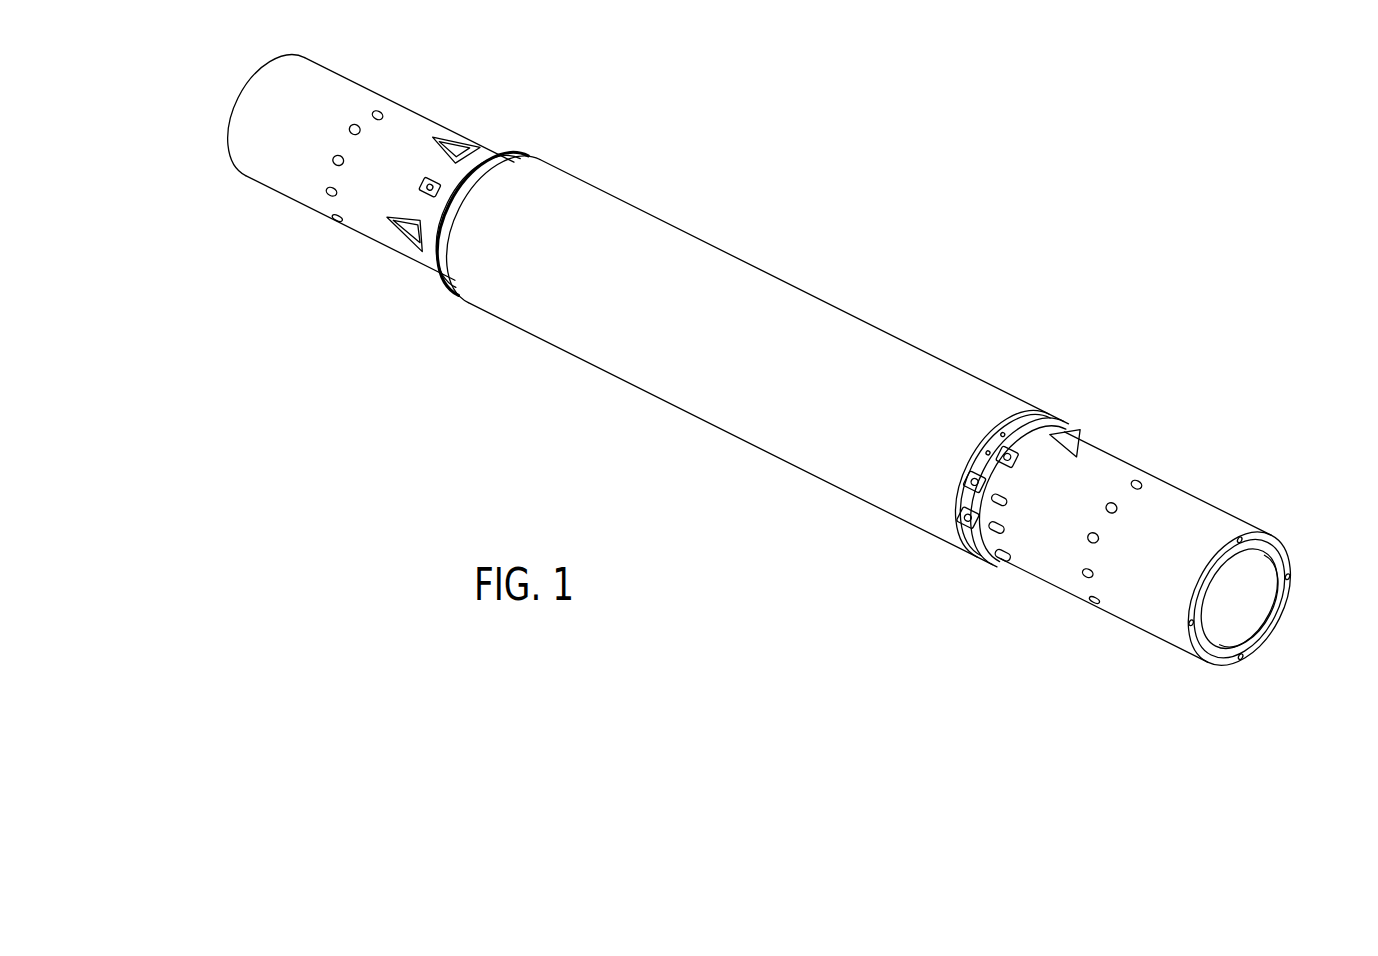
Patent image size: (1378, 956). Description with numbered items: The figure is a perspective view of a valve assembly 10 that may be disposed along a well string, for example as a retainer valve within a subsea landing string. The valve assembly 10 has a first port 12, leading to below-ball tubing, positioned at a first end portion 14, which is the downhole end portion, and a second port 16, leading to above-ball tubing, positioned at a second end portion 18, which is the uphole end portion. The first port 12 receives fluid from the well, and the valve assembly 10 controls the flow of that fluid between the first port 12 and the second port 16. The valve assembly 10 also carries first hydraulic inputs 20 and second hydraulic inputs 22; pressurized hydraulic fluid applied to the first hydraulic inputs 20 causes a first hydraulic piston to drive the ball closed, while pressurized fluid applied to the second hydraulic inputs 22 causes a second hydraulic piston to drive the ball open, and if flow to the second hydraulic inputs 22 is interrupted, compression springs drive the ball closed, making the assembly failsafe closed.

The valve assembly 10 is at (748, 354).
The first port 12 is at (1265, 598).
The first end portion 14 is at (1181, 557).
The second port 16 is at (324, 153).
The second end portion 18 is at (361, 153).
The first hydraulic input 20 is at (1010, 461).
The second hydraulic input 22 is at (453, 115).